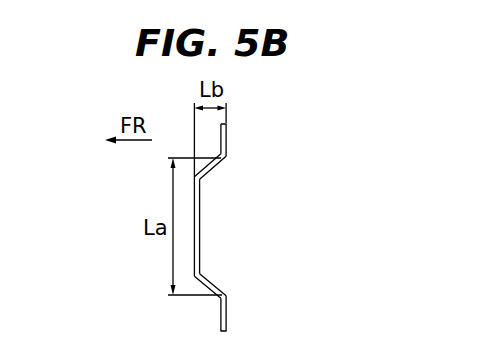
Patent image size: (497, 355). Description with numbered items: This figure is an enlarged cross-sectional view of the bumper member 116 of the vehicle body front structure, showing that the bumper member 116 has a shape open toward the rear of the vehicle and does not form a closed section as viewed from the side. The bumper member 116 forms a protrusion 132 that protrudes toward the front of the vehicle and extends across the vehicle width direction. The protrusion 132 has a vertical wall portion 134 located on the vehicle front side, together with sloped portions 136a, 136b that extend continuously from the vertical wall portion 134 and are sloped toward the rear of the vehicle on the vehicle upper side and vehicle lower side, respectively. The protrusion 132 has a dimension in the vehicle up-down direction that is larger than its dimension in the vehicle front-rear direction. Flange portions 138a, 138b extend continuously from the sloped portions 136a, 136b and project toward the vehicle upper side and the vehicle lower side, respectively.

The bumper member 116 is at (198, 229).
The protrusion 132 is at (276, 229).
The vertical wall portion 134 is at (200, 228).
The sloped portion 136a is at (217, 170).
The sloped portion 136b is at (208, 281).
The flange portion 138a is at (227, 139).
The flange portion 138b is at (228, 312).